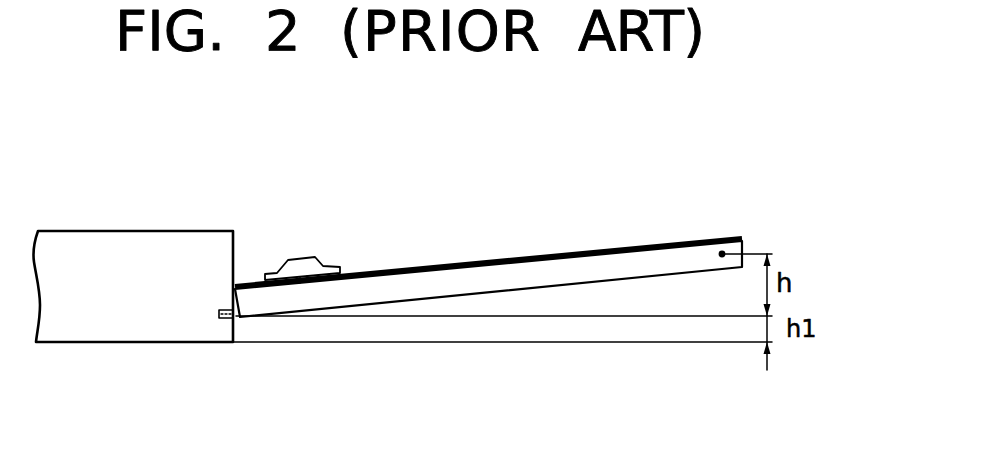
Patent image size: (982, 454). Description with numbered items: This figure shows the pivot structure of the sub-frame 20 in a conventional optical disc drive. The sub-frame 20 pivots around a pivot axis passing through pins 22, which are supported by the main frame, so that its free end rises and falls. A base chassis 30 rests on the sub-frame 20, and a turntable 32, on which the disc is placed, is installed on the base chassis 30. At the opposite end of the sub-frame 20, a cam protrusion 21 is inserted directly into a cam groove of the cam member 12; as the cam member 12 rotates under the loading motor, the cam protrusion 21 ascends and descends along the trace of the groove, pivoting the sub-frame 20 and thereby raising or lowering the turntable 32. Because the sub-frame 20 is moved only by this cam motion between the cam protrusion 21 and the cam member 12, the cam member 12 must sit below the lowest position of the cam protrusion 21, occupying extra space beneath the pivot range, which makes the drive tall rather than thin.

The cam member 12 is at (168, 238).
The sub-frame 20 is at (577, 262).
The base chassis 30 is at (440, 264).
The turntable 32 is at (304, 264).
The pins 22 is at (721, 251).
The cam protrusion 21 is at (223, 311).